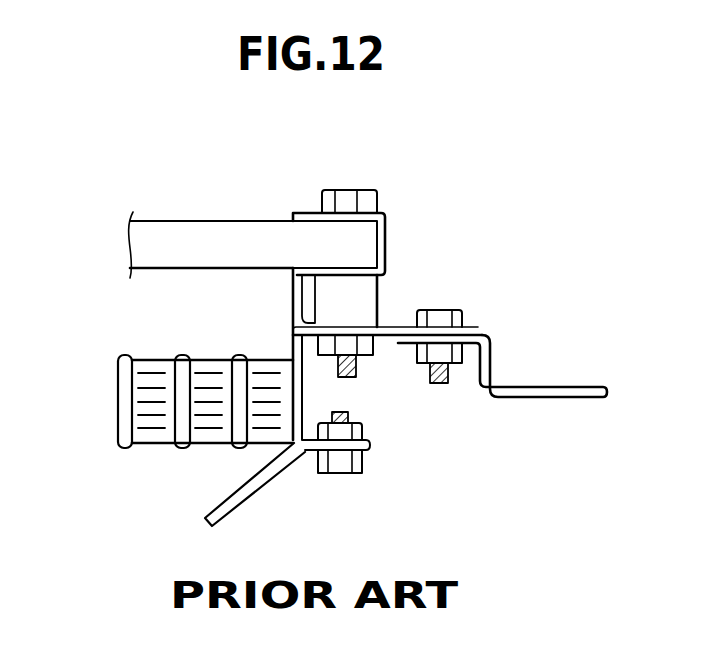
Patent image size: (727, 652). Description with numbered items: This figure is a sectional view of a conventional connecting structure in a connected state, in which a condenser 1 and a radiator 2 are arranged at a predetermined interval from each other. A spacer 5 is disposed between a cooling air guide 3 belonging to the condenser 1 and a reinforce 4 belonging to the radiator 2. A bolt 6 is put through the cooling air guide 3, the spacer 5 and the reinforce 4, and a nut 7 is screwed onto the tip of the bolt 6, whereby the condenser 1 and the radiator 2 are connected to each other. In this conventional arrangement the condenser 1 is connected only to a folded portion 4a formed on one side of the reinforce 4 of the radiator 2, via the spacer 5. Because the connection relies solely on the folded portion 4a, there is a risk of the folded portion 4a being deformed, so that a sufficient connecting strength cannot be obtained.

The condenser 1 is at (209, 221).
The radiator 2 is at (153, 445).
The cooling air guide 3 is at (390, 231).
The reinforce 4 is at (388, 338).
The folded portion 4a is at (398, 326).
The spacer 5 is at (382, 283).
The bolt 6 is at (347, 190).
The nut 7 is at (354, 339).